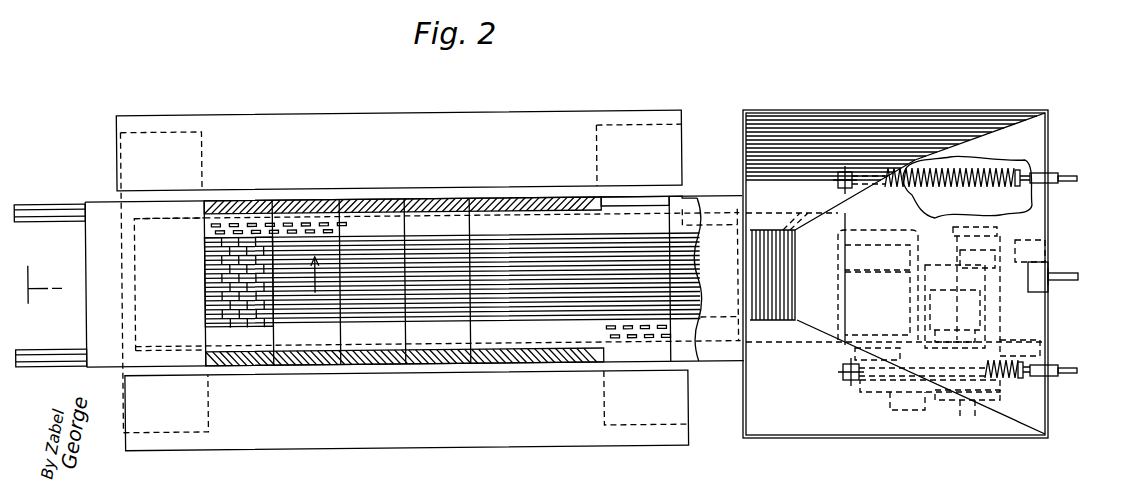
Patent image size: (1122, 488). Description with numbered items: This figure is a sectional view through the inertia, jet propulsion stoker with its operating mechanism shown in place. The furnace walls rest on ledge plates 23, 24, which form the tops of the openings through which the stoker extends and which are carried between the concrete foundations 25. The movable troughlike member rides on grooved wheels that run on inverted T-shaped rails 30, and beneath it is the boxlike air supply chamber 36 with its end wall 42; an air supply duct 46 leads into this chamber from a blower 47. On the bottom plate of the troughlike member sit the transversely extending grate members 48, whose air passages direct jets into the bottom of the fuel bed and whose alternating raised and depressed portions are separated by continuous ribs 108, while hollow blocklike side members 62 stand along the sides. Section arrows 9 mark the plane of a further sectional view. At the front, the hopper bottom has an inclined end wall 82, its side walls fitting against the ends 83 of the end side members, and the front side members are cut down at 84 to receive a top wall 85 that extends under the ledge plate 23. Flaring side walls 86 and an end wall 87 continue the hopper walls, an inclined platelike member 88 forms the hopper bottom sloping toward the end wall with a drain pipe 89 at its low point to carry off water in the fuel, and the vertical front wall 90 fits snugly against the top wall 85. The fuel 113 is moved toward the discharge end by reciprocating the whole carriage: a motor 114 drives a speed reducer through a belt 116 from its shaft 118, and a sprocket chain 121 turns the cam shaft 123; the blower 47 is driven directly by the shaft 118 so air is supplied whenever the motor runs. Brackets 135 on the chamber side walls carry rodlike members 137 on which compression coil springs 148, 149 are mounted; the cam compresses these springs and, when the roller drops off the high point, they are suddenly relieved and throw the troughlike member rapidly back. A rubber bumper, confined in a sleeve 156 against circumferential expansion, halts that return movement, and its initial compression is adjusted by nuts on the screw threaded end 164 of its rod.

The filter stack / section line 9 is at (167, 282).
The ledge plate 23 is at (600, 127).
The ledge plate 24 is at (185, 130).
The concrete foundations 25 is at (262, 113).
The rails 30 is at (70, 201).
The air supply chamber 36 is at (170, 352).
The end wall 42 is at (918, 312).
The air supply duct 46 is at (892, 273).
The blower 47 is at (1030, 258).
The grate members 48 is at (517, 320).
The side members 62 is at (372, 200).
The inclined end wall 82 is at (812, 343).
The ends 83 is at (748, 200).
The cut down portion 84 is at (640, 204).
The top wall 85 is at (690, 199).
The flaring side walls 86 is at (826, 124).
The end wall 87 is at (1040, 146).
The inclined platelike member 88 is at (786, 266).
The drain pipe 89 is at (805, 210).
The vertical front wall 90 is at (758, 408).
The continuous ribs 108 is at (440, 307).
The fuel 113 is at (140, 268).
The motor 114 is at (918, 328).
The belt 116 is at (850, 350).
The shaft 118 is at (205, 298).
The sprocket chain 121 is at (962, 262).
The cam shaft 123 is at (1032, 352).
The brackets 135 is at (836, 180).
The rodlike members 137 is at (1068, 182).
The compression coil springs 148 is at (1058, 176).
The compression coil springs 149 is at (962, 162).
The sleeve 156 is at (1046, 292).
The screw threaded end 164 is at (1062, 273).